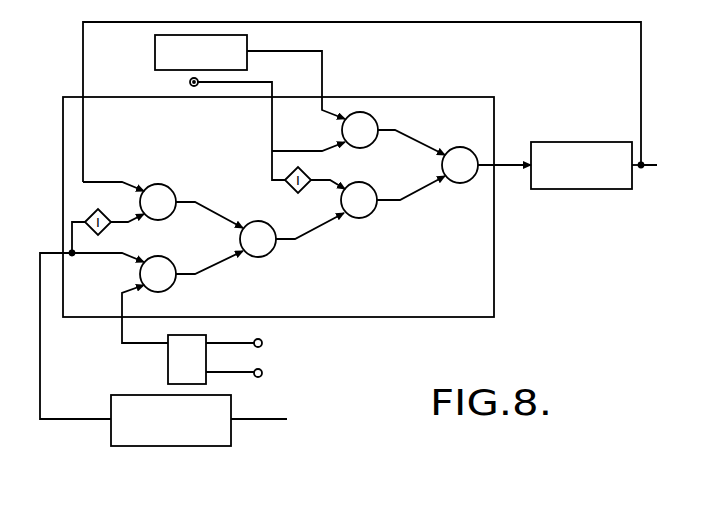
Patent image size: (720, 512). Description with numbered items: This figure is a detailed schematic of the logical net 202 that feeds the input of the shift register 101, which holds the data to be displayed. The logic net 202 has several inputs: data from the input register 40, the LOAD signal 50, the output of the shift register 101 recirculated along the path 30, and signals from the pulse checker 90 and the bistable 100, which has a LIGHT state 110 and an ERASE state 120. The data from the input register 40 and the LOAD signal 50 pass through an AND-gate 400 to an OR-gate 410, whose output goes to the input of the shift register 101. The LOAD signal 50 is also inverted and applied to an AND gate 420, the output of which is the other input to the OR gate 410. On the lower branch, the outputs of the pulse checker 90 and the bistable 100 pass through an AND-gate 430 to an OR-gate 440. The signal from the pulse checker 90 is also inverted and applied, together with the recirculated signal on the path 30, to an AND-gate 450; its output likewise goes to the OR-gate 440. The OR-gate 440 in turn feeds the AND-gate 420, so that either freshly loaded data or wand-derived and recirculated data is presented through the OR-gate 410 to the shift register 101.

The recirculation path 30 is at (83, 66).
The input register 40 is at (155, 41).
The LOAD signal 50 is at (198, 80).
The logical net 202 is at (430, 97).
The AND-gate 400 is at (374, 119).
The OR-gate 410 is at (465, 148).
The AND gate 420 is at (373, 189).
The AND-gate 430 is at (171, 287).
The OR-gate 440 is at (270, 253).
The AND-gate 450 is at (171, 189).
The bistable 100 is at (168, 370).
The LIGHT state 110 is at (256, 339).
The ERASE state 120 is at (260, 378).
The shift register 101 is at (563, 142).
The pulse checker 90 is at (111, 433).